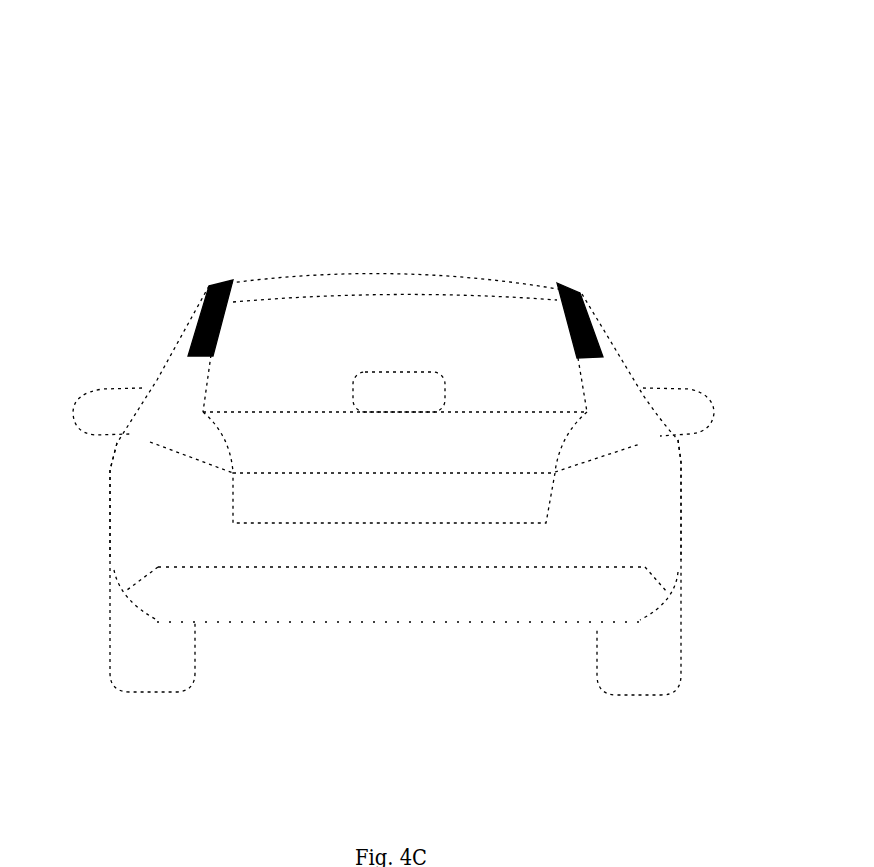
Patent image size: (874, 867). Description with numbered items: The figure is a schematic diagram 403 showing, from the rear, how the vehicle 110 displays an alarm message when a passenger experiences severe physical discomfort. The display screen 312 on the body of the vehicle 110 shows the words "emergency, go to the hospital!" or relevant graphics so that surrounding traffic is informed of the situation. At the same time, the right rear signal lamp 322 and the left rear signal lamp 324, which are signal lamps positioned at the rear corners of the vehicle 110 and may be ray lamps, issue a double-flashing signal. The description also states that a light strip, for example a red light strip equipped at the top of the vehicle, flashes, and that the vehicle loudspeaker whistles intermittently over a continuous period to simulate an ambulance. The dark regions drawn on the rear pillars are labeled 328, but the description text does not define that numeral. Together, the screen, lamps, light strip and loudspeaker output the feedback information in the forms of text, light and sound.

The schematic diagram 403 is at (130, 58).
The vehicle 110 is at (362, 272).
The pillar display 328 is at (200, 320).
The left rear signal lamp 324 is at (115, 462).
The right rear signal lamp 322 is at (667, 466).
The display screen 312 is at (427, 525).